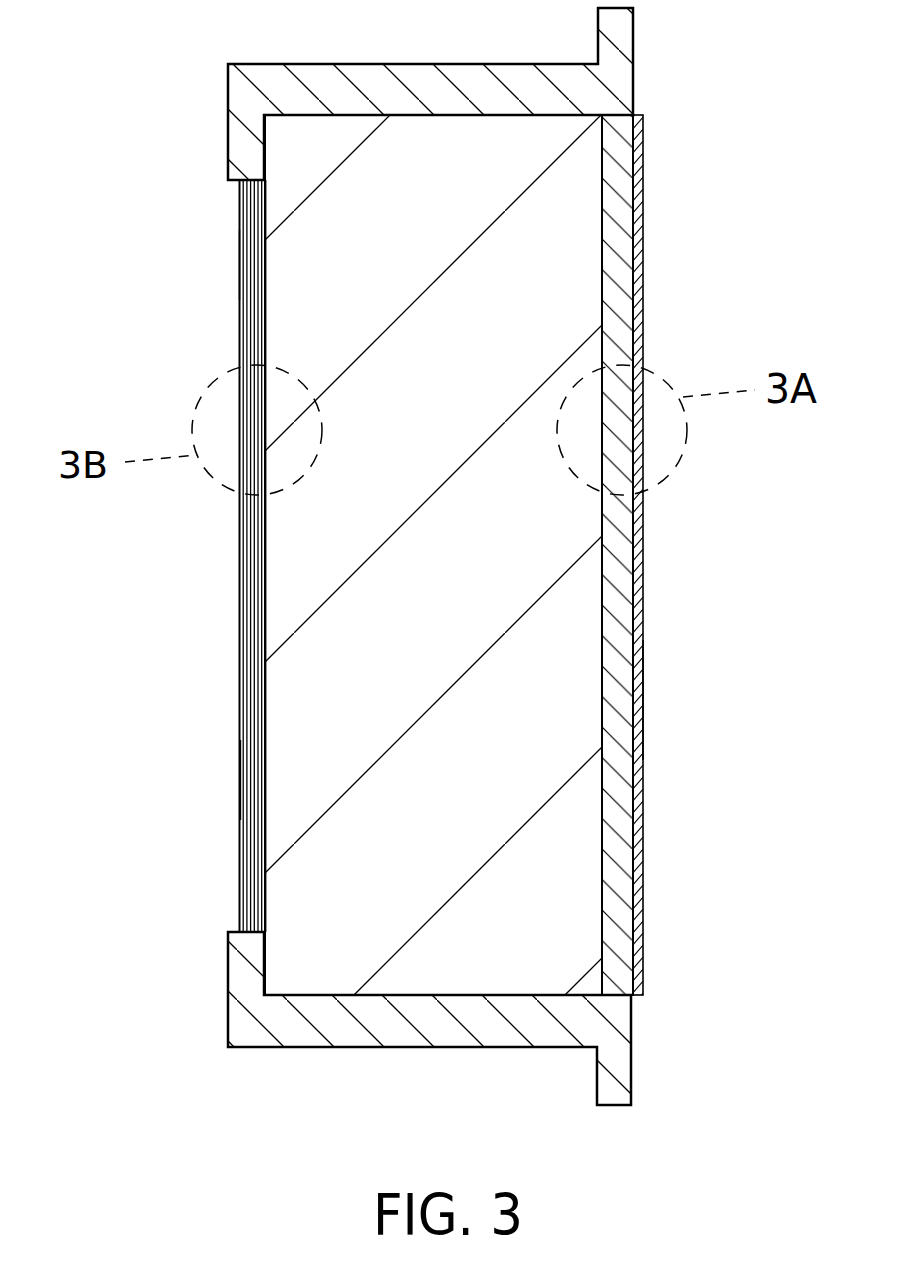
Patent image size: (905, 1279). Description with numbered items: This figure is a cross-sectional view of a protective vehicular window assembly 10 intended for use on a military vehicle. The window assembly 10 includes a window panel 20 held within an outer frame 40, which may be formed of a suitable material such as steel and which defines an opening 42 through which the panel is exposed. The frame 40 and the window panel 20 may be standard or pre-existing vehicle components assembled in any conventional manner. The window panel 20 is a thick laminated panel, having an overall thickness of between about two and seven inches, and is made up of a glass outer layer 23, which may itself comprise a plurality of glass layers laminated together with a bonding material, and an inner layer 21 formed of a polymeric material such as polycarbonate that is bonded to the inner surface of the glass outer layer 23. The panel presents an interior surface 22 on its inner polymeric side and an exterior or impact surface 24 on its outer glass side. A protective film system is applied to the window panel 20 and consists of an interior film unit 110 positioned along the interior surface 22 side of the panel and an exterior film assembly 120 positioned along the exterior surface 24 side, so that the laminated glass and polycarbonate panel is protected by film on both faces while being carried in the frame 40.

The protective vehicular window assembly 10 is at (153, 40).
The outer frame 40 is at (450, 63).
The window panel 20 is at (430, 1015).
The glass outer layer 23 is at (548, 857).
The inner layer 21 is at (623, 177).
The interior film unit 110 is at (643, 620).
The exterior surface 24 is at (643, 697).
The interior surface 22 is at (265, 689).
The exterior film assembly 120 is at (224, 793).
The opening 42 is at (165, 280).